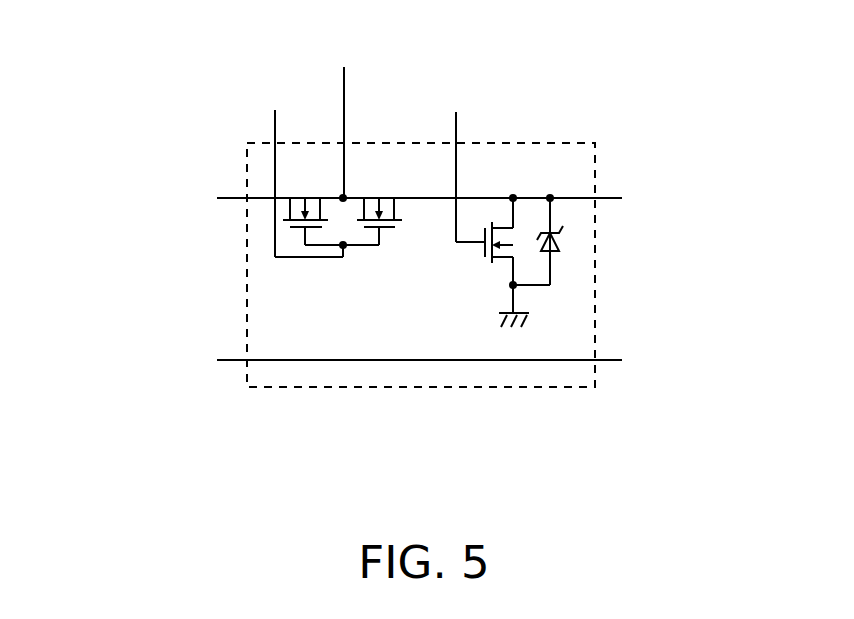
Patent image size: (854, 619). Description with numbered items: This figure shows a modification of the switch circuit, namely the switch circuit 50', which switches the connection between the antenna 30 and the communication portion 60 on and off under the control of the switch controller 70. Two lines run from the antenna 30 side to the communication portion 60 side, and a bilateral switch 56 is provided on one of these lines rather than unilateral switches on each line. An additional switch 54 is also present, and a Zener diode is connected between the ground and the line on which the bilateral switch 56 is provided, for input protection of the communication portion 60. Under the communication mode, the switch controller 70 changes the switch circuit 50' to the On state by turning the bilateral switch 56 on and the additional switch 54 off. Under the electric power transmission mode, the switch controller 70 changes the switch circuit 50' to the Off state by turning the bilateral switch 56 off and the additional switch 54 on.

The switch circuit 50' is at (421, 304).
The additional switch 54 is at (483, 282).
The bilateral switch 56 is at (319, 275).
The switch controller 70 is at (368, 133).
The antenna 30 is at (256, 282).
The communication portion 60 is at (591, 282).